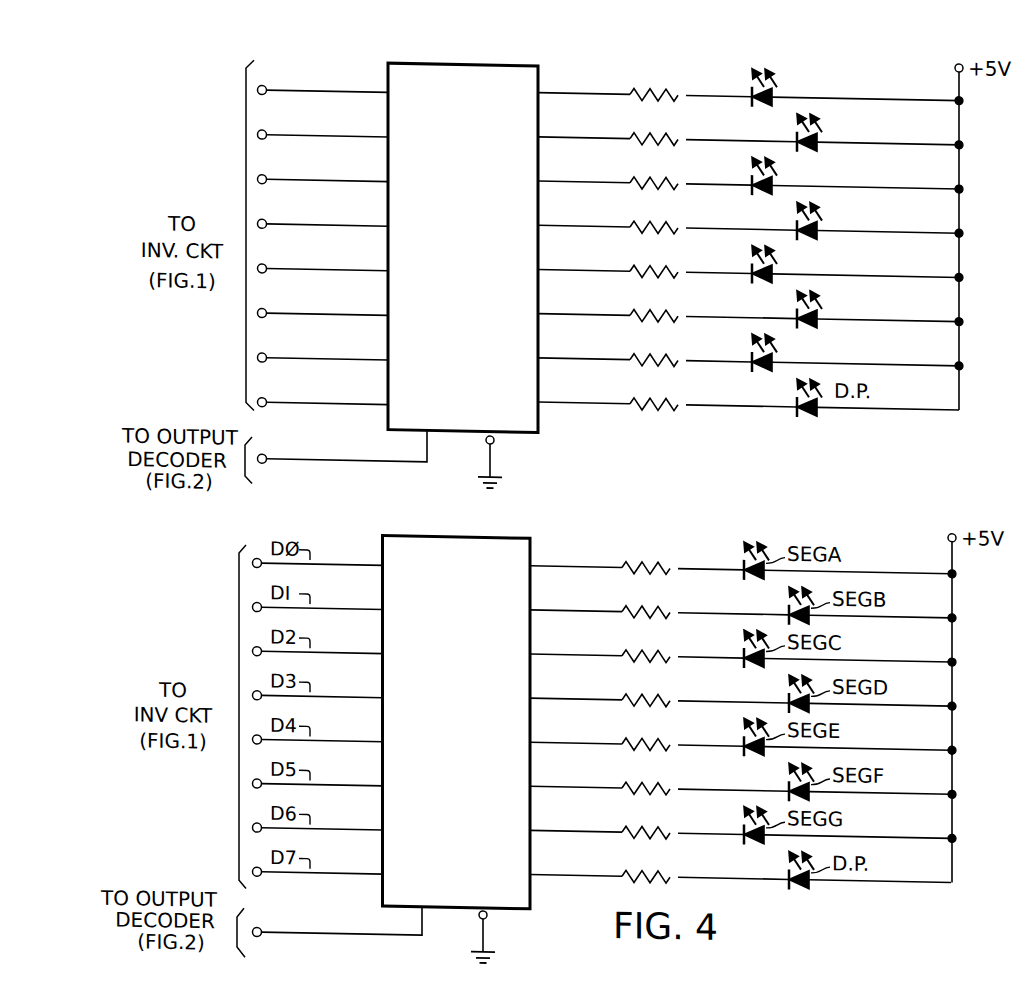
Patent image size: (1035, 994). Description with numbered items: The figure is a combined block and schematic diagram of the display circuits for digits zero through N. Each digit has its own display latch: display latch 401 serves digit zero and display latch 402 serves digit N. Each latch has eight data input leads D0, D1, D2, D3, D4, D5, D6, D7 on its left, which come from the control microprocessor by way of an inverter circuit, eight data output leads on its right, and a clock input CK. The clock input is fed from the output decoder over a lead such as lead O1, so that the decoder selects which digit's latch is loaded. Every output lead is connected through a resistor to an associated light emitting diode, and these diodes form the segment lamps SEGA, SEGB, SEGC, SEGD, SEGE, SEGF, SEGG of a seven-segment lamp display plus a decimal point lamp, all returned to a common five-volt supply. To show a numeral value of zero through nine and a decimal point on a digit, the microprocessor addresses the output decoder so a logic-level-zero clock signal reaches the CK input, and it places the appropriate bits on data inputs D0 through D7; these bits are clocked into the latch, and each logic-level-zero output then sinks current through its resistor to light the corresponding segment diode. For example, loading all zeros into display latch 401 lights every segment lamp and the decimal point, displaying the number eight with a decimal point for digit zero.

The display latch 401 is at (428, 284).
The display latch 402 is at (464, 766).
The segment lamp SEGA is at (750, 87).
The segment lamp SEGB is at (750, 131).
The segment lamp SEGC is at (750, 175).
The segment lamp SEGD is at (750, 219).
The segment lamp SEGE is at (750, 263).
The segment lamp SEGF is at (750, 308).
The segment lamp SEGG is at (750, 352).
The data input lead D0 is at (323, 80).
The data input lead D1 is at (323, 125).
The data input lead D2 is at (323, 169).
The data input lead D3 is at (323, 214).
The data input lead D4 is at (323, 258).
The data input lead D5 is at (323, 303).
The data input lead D6 is at (323, 348).
The data input lead D7 is at (323, 392).
The clock lead O1 is at (335, 460).